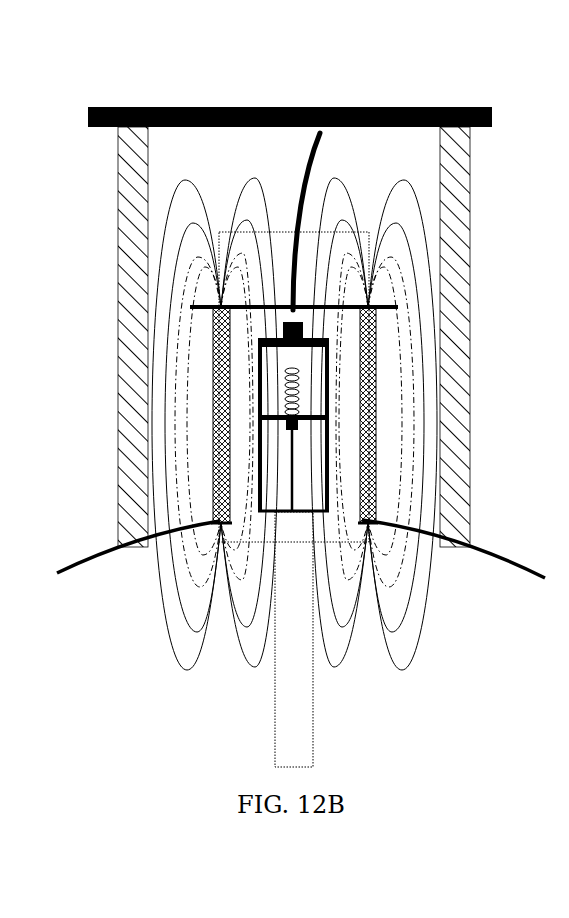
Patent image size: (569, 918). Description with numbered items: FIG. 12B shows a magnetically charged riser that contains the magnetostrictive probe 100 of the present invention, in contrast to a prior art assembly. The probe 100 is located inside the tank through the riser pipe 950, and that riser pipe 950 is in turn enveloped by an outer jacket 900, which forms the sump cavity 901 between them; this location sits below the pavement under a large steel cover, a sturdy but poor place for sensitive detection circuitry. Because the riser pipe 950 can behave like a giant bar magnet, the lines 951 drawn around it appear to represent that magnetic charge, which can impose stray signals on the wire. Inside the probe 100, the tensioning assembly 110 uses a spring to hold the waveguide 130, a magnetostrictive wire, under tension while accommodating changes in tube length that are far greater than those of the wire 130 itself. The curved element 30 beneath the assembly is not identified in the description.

The outer jacket 900 is at (393, 105).
The sump cavity 901 is at (393, 153).
The magnetic field lines 951 is at (236, 235).
The riser pipe 950 is at (377, 331).
The tensioning assembly 110 is at (283, 390).
The waveguide 130 is at (295, 458).
The magnetostrictive probe 100 is at (320, 673).
The curved surface 30 is at (87, 552).